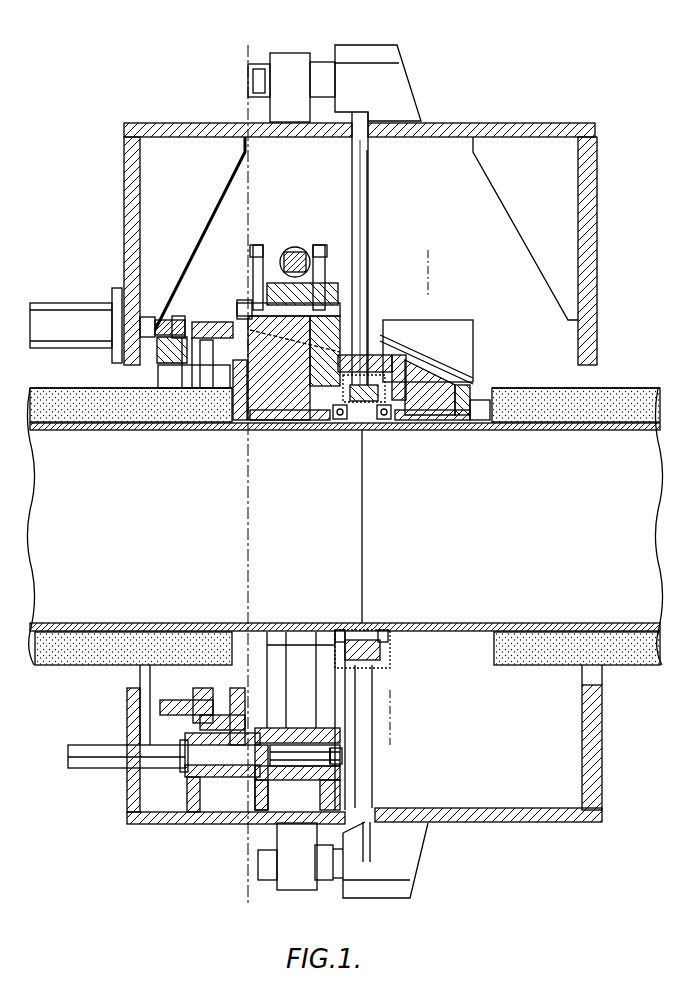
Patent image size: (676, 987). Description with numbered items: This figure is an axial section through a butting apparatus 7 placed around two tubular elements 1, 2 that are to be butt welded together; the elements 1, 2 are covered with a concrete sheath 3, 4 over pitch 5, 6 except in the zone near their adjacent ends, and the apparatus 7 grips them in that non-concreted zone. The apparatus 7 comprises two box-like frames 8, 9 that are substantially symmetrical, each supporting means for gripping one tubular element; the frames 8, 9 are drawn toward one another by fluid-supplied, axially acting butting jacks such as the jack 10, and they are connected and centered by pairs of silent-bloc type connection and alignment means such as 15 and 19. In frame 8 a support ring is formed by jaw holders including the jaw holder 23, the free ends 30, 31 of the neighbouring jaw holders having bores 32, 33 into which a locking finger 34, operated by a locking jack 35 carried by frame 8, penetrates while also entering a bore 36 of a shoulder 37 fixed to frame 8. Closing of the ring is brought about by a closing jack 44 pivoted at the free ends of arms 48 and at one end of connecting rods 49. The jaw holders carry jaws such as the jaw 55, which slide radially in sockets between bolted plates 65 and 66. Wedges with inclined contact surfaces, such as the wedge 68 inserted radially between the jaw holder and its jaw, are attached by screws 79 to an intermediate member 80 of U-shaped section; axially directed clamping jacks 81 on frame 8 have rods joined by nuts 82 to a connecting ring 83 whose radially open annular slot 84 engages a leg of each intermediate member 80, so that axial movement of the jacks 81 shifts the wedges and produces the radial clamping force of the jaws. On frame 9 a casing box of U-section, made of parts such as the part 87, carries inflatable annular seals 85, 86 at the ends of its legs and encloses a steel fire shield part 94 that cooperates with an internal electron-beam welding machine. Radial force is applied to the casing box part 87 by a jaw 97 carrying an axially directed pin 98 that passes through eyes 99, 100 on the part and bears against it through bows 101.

The tubular element 1 is at (95, 432).
The tubular element 2 is at (244, 47).
The concrete sheath 3 is at (62, 395).
The concrete sheath 4 is at (610, 395).
The pitch 5 is at (35, 390).
The pitch 6 is at (650, 395).
The butting apparatus 7 is at (453, 122).
The frame 8 is at (148, 123).
The frame 9 is at (535, 123).
The butting jack 10 is at (428, 270).
The connection and alignment means 15 is at (332, 62).
The connection and alignment means 19 is at (325, 870).
The jaw holder 23 is at (358, 300).
The free end 30 is at (262, 790).
The free end 31 is at (302, 782).
The bore 32 is at (285, 745).
The bore 33 is at (312, 728).
The locking finger 34 is at (335, 758).
The locking jack 35 is at (90, 755).
The bore 36 is at (340, 766).
The shoulder 37 is at (305, 824).
The closing jack 44 is at (296, 248).
The arms 48 is at (325, 245).
The connecting rods 49 is at (338, 285).
The jaw 55 is at (285, 432).
The plate 65 is at (260, 432).
The plate 66 is at (305, 432).
The plate 68 is at (233, 432).
The screws 79 is at (215, 432).
The intermediate member 80 is at (200, 324).
The clamping jack 81 is at (80, 305).
The nuts 82 is at (185, 318).
The connecting ring 83 is at (163, 430).
The annular slot 84 is at (188, 432).
The inflatable annular seal 85 is at (340, 432).
The inflatable annular seal 86 is at (395, 432).
The casing box part 87 is at (368, 432).
The fire shield part 94 is at (375, 432).
The jaw 97 is at (440, 432).
The pin 98 is at (400, 352).
The eye 99 is at (420, 362).
The eye 100 is at (320, 432).
The bows 101 is at (365, 352).